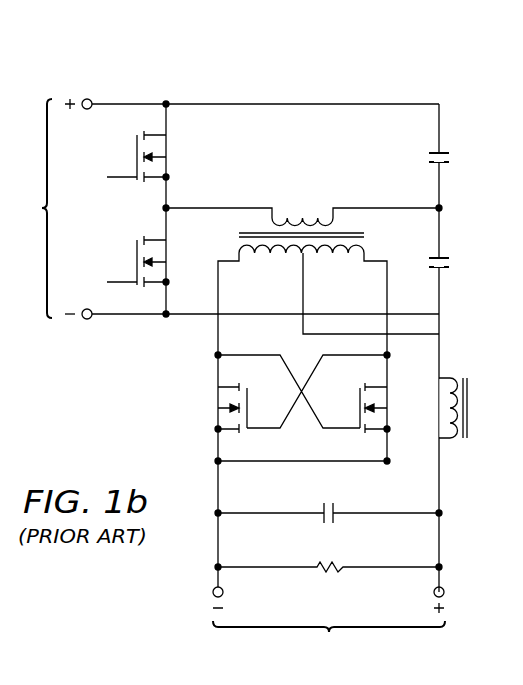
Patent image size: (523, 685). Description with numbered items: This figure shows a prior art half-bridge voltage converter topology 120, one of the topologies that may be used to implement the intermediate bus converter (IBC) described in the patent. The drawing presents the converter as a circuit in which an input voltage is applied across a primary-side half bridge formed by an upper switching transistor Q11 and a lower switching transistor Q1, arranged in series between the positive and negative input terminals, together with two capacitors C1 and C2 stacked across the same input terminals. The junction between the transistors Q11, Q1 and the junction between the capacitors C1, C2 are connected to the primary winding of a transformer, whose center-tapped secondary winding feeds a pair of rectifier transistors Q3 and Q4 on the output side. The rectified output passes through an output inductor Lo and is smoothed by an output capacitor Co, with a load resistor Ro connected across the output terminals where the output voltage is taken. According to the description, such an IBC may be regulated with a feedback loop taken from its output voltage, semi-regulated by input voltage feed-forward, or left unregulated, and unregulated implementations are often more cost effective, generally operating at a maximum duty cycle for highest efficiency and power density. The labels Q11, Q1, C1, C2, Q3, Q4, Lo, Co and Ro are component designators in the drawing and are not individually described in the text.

The half-bridge voltage converter topology 120 is at (368, 80).
The upper input switch transistor Q11 is at (156, 156).
The lower input switch transistor Q1 is at (151, 261).
The input capacitor C1 is at (452, 157).
The input capacitor C2 is at (452, 262).
The synchronous rectifier transistor Q3 is at (214, 408).
The synchronous rectifier transistor Q4 is at (390, 408).
The output inductor Lo is at (467, 408).
The output capacitor Co is at (328, 502).
The load resistor Ro is at (328, 555).